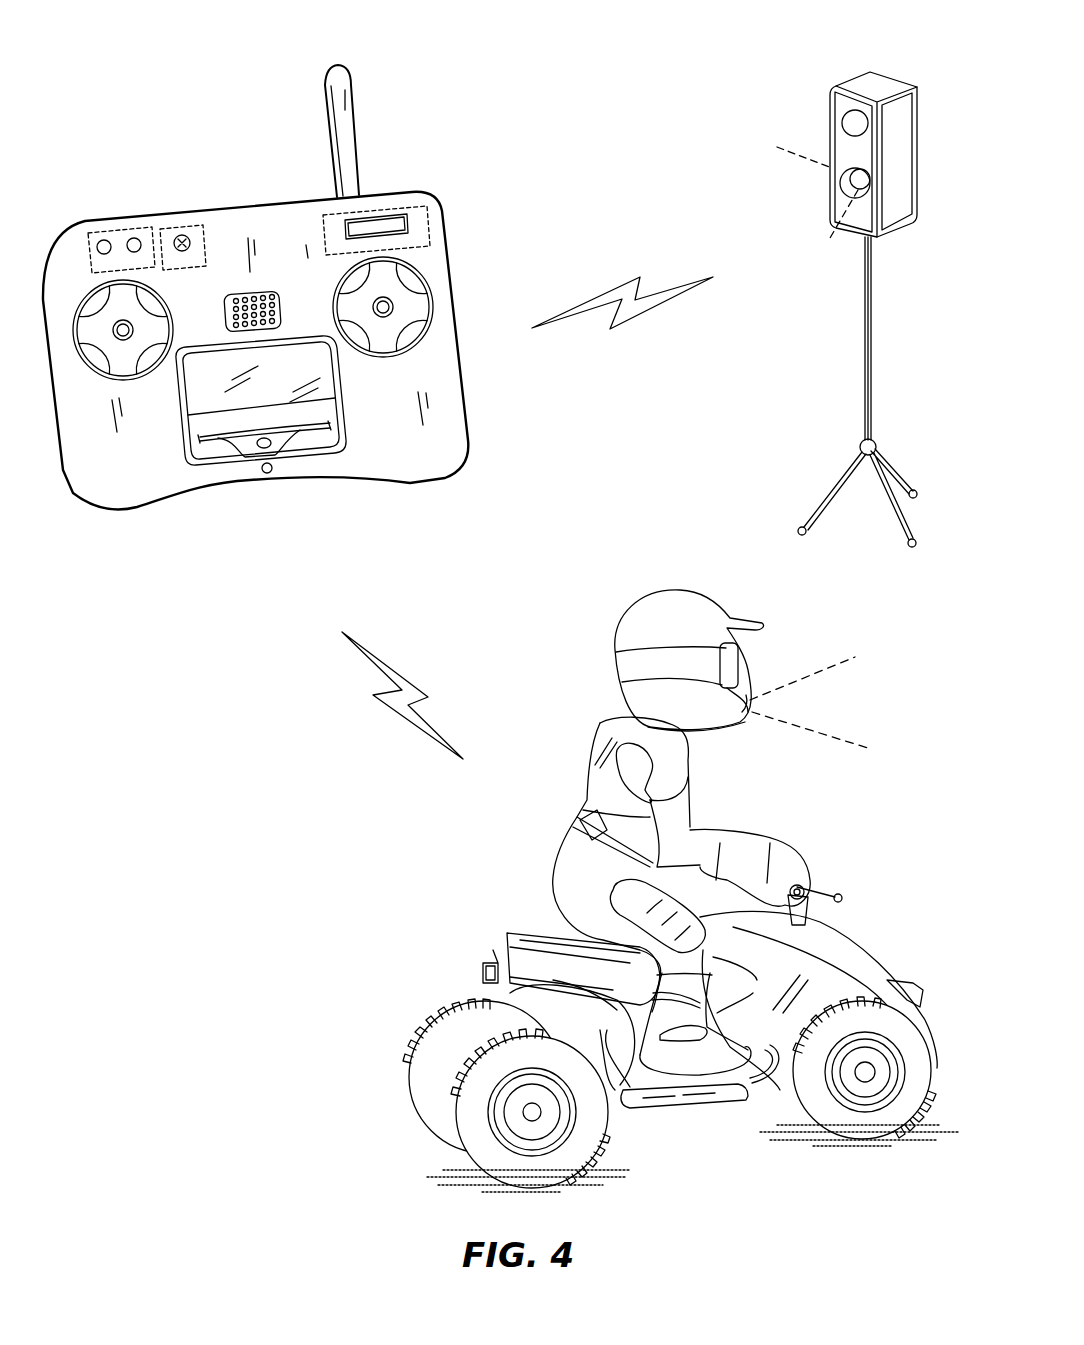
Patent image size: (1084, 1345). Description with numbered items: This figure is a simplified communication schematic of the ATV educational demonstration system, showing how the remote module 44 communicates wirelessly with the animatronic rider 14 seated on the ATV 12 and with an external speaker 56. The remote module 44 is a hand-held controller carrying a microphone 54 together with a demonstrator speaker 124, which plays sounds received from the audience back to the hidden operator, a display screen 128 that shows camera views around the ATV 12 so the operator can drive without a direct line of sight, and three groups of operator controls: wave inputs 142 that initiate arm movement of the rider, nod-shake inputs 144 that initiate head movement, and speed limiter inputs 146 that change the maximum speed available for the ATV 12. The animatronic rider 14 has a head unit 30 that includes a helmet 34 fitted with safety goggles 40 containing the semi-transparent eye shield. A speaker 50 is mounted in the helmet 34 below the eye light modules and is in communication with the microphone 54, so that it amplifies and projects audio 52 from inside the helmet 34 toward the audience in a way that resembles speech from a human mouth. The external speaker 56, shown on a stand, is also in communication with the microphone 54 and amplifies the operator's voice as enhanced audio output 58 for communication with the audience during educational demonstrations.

The ATV 12 is at (500, 910).
The animatronic rider 14 is at (578, 690).
The head unit 30 is at (713, 590).
The helmet 34 is at (663, 602).
The safety goggles 40 is at (736, 652).
The remote module 44 is at (60, 232).
The speaker 50 is at (737, 716).
The audio 52 is at (828, 740).
The microphone 54 is at (267, 474).
The external speaker 56 is at (850, 80).
The enhanced audio output 58 is at (828, 240).
The demonstrator speaker 124 is at (263, 290).
The display screen 128 is at (341, 452).
The wave inputs 142 is at (208, 232).
The nod-shake inputs 144 is at (128, 233).
The speed limiter inputs 146 is at (418, 212).